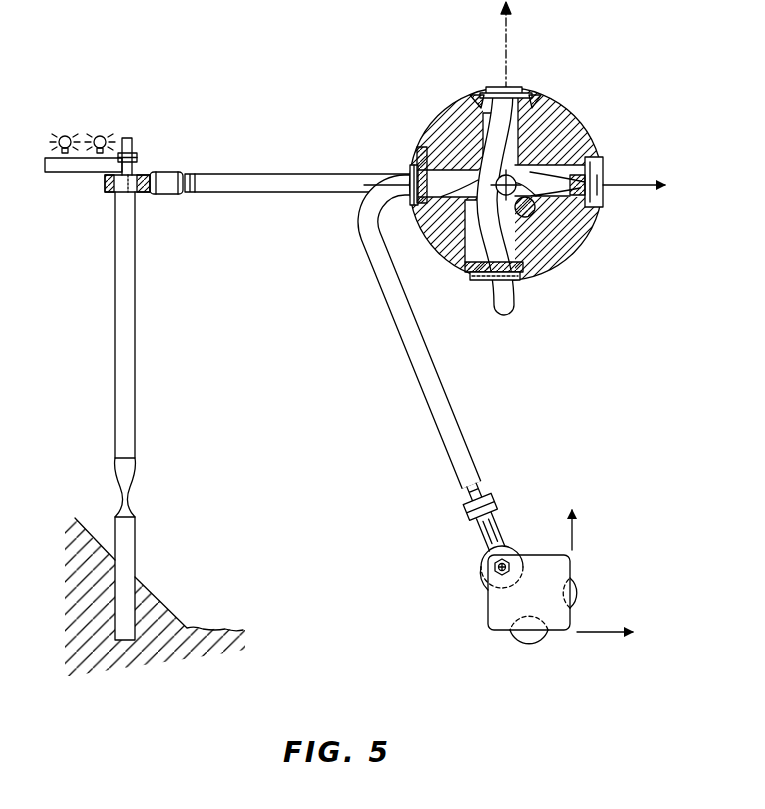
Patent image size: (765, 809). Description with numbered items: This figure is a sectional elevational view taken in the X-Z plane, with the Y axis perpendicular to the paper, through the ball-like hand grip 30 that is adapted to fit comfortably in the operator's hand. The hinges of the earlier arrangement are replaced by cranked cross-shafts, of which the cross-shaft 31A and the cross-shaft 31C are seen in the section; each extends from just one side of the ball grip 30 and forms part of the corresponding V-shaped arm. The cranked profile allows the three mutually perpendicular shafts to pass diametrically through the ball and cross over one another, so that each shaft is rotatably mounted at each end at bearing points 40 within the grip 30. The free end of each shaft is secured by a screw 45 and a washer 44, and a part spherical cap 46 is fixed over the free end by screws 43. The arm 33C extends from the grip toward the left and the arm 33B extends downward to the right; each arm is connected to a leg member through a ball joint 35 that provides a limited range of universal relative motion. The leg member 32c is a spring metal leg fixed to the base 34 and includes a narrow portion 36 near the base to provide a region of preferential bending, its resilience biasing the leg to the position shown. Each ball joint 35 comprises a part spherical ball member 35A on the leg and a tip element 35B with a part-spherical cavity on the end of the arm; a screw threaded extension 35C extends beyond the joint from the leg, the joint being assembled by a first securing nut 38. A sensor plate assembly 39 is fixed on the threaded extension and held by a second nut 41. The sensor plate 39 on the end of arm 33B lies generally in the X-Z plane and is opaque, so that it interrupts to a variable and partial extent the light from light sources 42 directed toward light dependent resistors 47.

The hand grip 30 is at (577, 118).
The cranked cross-shaft 31A is at (422, 168).
The cranked cross-shaft 31C is at (533, 210).
The leg member 32c is at (128, 356).
The arm member 33B is at (440, 396).
The arm member 33C is at (245, 185).
The base 34 is at (168, 613).
The ball joint 35 is at (142, 195).
The part spherical ball member 35A is at (118, 190).
The tip element 35B is at (492, 522).
The screw threaded extension 35C is at (128, 140).
The narrow portion 36 is at (130, 493).
The first securing nut 38 is at (155, 178).
The sensor plate assembly 39 is at (82, 146).
The bearing points 40 is at (414, 180).
The second nut 41 is at (142, 176).
The light sources 42 is at (66, 135).
The screws 43 is at (480, 100).
The washer 44 is at (498, 92).
The screw 45 is at (508, 90).
The part spherical cap 46 is at (532, 96).
The light dependent resistors 47 is at (585, 593).